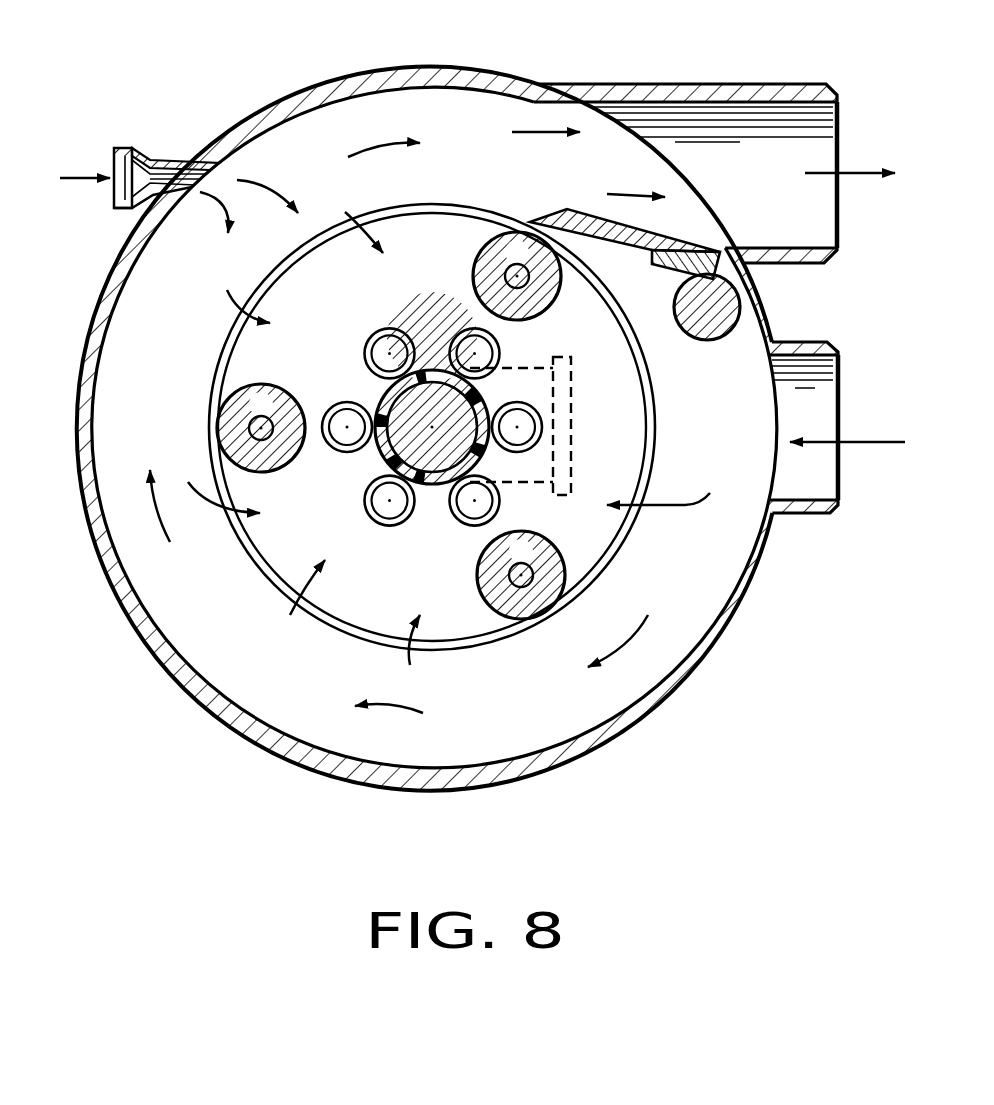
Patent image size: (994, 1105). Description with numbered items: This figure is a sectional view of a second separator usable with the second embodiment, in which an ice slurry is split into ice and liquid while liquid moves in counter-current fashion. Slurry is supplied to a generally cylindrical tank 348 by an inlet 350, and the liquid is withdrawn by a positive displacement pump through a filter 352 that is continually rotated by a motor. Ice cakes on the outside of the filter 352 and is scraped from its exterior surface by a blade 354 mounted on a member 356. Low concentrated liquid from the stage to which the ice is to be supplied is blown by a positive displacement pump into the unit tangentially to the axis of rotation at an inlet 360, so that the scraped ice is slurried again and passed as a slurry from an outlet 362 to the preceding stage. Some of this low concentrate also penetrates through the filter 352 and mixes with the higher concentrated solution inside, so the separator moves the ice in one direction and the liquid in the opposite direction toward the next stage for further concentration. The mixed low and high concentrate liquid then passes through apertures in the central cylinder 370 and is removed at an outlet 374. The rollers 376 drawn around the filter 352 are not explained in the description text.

The pump housing 348 is at (531, 772).
The inlet port flange 350 is at (813, 490).
The rotor 352 is at (625, 537).
The baffle 354 is at (593, 209).
The sealing roller 356 is at (718, 343).
The inlet nozzle 360 is at (150, 152).
The outlet duct 362 is at (821, 64).
The rotor bolt holes 370 is at (378, 461).
The drive coupling (phantom) 374 is at (571, 469).
The rollers 376 is at (558, 296).